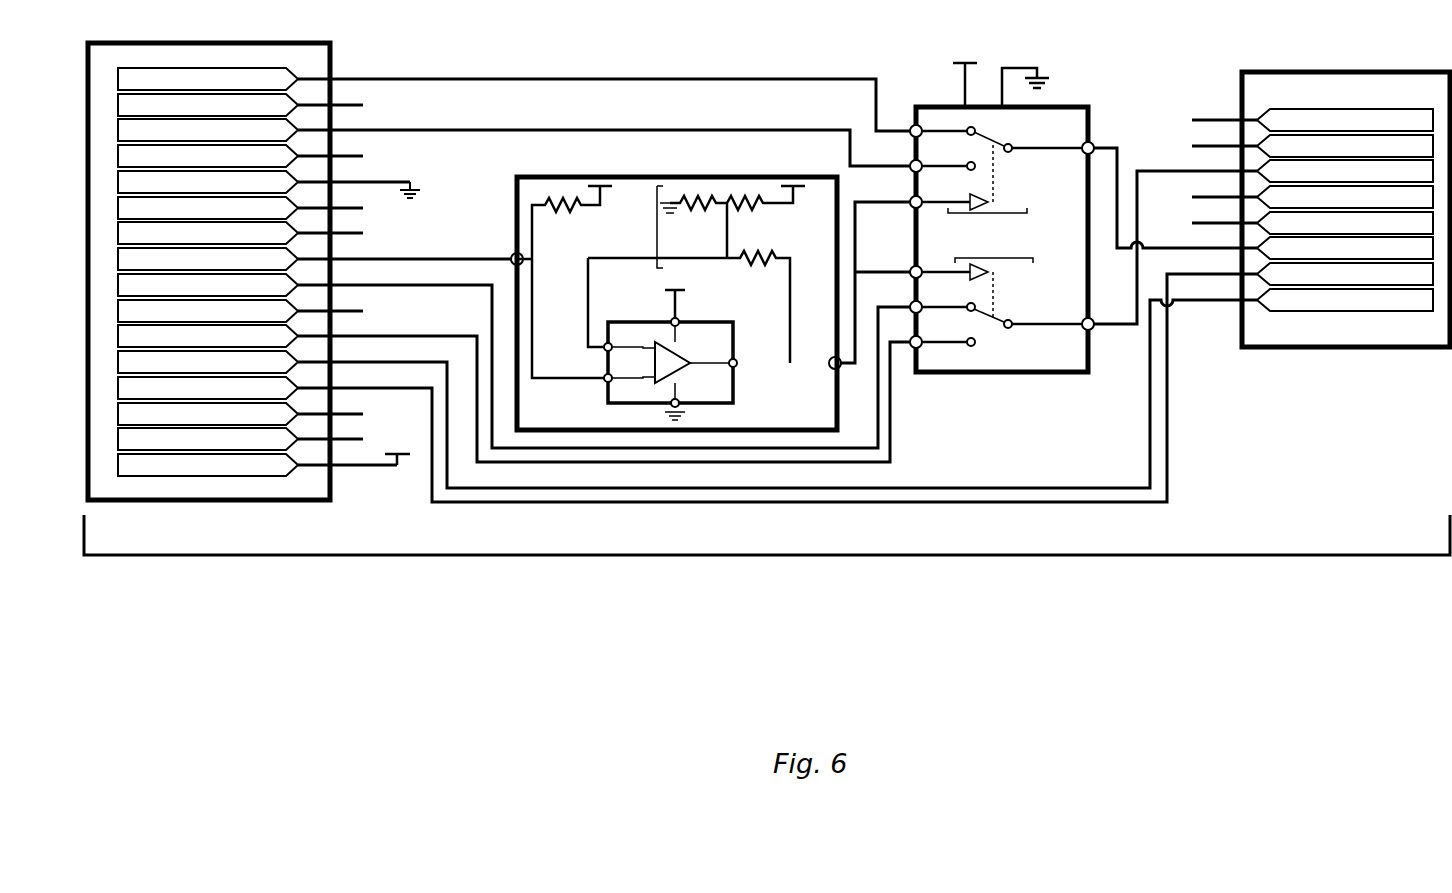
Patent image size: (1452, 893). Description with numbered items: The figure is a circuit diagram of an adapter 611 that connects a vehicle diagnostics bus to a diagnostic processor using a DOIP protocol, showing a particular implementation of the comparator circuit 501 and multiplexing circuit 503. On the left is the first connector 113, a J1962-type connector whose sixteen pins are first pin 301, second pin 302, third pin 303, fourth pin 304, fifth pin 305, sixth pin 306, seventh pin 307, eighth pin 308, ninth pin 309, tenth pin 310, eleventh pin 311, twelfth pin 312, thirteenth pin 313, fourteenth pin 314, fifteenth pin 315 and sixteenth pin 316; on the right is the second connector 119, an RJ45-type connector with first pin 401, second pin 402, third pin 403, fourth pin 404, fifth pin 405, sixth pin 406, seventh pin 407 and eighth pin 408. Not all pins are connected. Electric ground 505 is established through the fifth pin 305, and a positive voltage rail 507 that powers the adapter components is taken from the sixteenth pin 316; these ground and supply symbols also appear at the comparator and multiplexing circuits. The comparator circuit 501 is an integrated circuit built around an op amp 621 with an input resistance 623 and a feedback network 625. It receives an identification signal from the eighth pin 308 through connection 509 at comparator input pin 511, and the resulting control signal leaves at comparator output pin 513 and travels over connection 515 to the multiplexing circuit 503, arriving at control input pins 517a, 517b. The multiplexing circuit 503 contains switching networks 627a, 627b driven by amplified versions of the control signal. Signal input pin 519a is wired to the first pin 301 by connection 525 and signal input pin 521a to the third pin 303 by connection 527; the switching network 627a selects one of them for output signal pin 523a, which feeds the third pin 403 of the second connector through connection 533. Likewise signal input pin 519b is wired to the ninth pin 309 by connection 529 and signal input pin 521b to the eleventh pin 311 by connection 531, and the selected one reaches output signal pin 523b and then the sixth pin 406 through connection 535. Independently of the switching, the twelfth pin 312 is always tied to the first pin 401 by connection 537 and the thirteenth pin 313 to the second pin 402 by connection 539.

The first connector 113 is at (209, 271).
The Pin 1 301 is at (208, 79).
The Pin 2 302 is at (240, 105).
The Pin 3 303 is at (208, 130).
The Pin 4 304 is at (240, 156).
The Pin 5 305 is at (264, 182).
The Pin 6 306 is at (240, 208).
The Pin 7 307 is at (240, 233).
The Pin 8 308 is at (208, 259).
The Pin 9 309 is at (208, 285).
The Pin 10 310 is at (240, 311).
The Pin 11 311 is at (208, 336).
The Pin 12 312 is at (208, 362).
The Pin 13 313 is at (208, 388).
The Pin 14 314 is at (240, 414).
The Pin 15 315 is at (240, 439).
The Pin 16 316 is at (257, 465).
The second connector 119 is at (1346, 209).
The Pin 1 401 is at (1345, 300).
The Pin 2 402 is at (1345, 274).
The Pin 3 403 is at (1345, 248).
The Pin 4 404 is at (1312, 223).
The Pin 5 405 is at (1312, 197).
The Pin 6 406 is at (1345, 171).
The Pin 7 407 is at (1312, 146).
The Pin 8 408 is at (1312, 120).
The comparator circuit 501 is at (677, 303).
The multiplexing circuit 503 is at (1002, 239).
The electric ground 505 is at (415, 188).
The positive voltage rail 507 is at (394, 465).
The connection 509 is at (460, 259).
The comparator input pin 511 is at (510, 256).
The comparator output pin 513 is at (840, 366).
The connection 515 is at (858, 220).
The control input pin 517a is at (910, 202).
The control input pin 517b is at (916, 272).
The signal input pin 519a is at (913, 128).
The signal input pin 519b is at (910, 307).
The signal input pin 521a is at (910, 166).
The signal input pin 521b is at (913, 348).
The output signal pin 523a is at (1088, 148).
The output signal pin 523b is at (1092, 319).
The connection 525 is at (555, 79).
The connection 527 is at (622, 130).
The connection 529 is at (492, 302).
The connection 531 is at (412, 336).
The connection 533 is at (1168, 246).
The connection 535 is at (1122, 326).
The connection 537 is at (1114, 486).
The connection 539 is at (1120, 505).
The adapter 611 is at (768, 555).
The op amp 621 is at (648, 319).
The input resistance 623 is at (556, 206).
The feedback network 625 is at (657, 226).
The switching network 627a is at (1002, 185).
The switching network 627b is at (1002, 290).